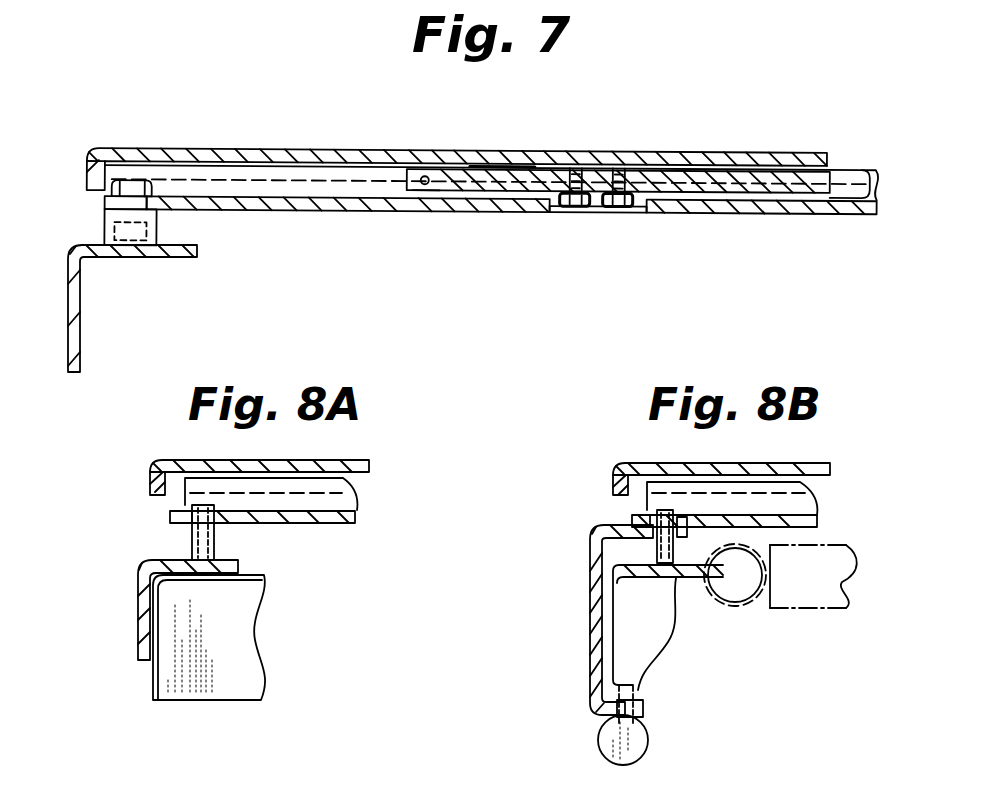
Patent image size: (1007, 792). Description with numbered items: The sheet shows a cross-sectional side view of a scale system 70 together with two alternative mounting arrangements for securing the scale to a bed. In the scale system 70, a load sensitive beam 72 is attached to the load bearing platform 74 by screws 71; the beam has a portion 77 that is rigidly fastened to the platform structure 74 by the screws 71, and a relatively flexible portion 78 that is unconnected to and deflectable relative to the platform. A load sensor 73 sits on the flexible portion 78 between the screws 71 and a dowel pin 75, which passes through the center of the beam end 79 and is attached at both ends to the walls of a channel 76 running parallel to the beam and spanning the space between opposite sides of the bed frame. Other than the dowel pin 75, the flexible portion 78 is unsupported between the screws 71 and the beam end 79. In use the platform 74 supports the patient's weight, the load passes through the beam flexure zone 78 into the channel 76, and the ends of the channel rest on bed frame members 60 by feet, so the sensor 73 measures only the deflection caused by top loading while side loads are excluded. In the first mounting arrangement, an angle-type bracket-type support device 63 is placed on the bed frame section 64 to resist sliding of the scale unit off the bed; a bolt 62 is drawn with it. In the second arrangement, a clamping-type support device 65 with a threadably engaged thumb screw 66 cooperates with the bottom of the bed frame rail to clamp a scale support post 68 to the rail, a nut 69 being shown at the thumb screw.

In FIG. 7, the bed frame member 60 is at (62, 362).
In FIG. 7, the scale system 70 is at (657, 212).
In FIG. 7, the screws 71 is at (612, 152).
In FIG. 7, the load sensitive beam 72 is at (700, 170).
In FIG. 7, the load sensor 73 is at (507, 166).
In FIG. 7, the load bearing platform 74 is at (291, 150).
In FIG. 7, the dowel pin 75 is at (427, 172).
In FIG. 7, the channel 76 is at (283, 212).
In FIG. 7, the rigidly attached portion of the beam 77 is at (763, 176).
In FIG. 7, the relatively flexible portion 78 is at (515, 190).
In FIG. 7, the beam end 79 is at (429, 189).
In FIG. 8A, the bolt 62 is at (240, 537).
In FIG. 8A, the bracket-type support device 63 is at (140, 628).
In FIG. 8A, the bed frame section 64 is at (236, 690).
In FIG. 8B, the clamping-type support device 65 is at (598, 596).
In FIG. 8B, the thumb screw 66 is at (601, 737).
In FIG. 8B, the scale support post 68 is at (655, 557).
In FIG. 8B, the nut 69 is at (641, 700).